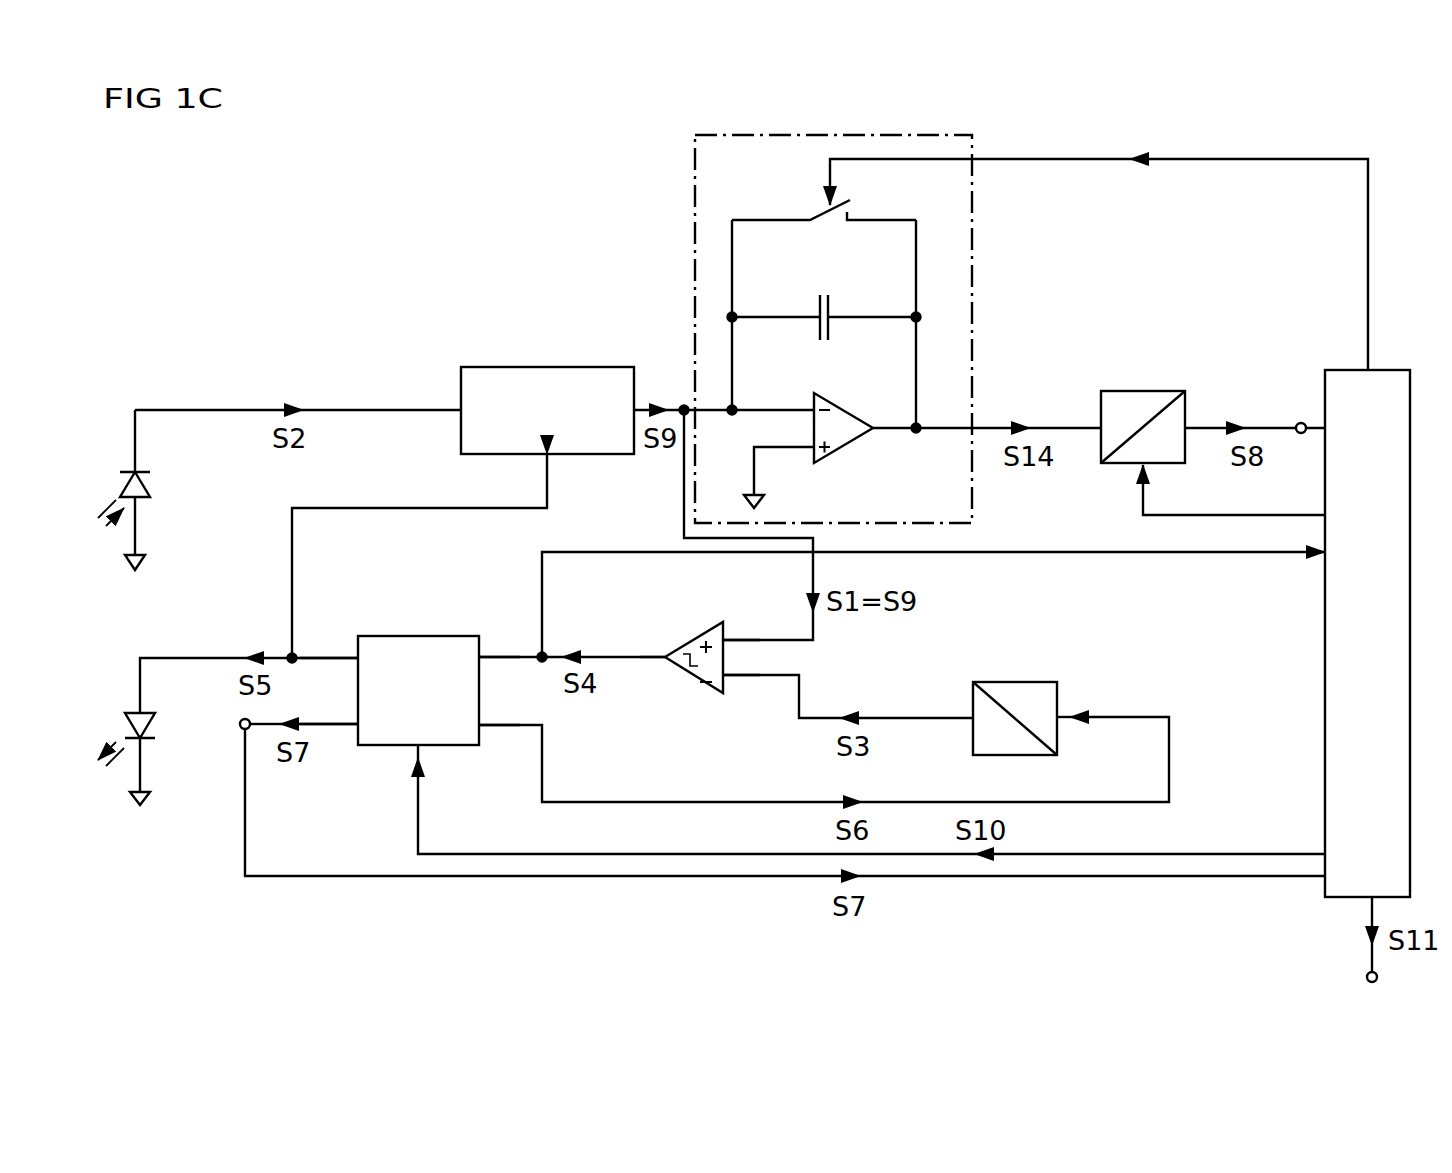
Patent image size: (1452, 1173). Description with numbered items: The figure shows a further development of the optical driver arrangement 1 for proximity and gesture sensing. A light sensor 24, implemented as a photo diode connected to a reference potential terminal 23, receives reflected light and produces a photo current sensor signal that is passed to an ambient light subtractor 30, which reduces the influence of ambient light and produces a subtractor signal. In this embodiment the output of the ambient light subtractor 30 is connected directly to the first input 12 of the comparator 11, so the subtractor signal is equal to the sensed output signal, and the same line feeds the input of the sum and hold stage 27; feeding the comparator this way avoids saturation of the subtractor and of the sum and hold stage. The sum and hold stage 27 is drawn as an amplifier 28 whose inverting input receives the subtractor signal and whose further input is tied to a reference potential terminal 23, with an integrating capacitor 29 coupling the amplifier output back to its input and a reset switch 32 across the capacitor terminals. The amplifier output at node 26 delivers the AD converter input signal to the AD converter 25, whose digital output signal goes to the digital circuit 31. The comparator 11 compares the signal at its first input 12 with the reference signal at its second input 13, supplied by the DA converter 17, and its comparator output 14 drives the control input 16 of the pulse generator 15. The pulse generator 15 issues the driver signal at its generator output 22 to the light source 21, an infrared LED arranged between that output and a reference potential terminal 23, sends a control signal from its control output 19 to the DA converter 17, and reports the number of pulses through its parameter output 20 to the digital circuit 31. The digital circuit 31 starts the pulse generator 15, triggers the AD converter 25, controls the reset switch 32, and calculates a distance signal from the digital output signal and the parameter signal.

The optical sensor device 1 is at (1410, 142).
The comparator 11 is at (690, 640).
The first input 12 is at (725, 640).
The second input 13 is at (725, 676).
The comparator output 14 is at (668, 662).
The pulse generator 15 is at (420, 636).
The control input 16 is at (479, 636).
The DA converter 17 is at (1015, 682).
The control output 19 is at (479, 745).
The parameter output 20 is at (358, 745).
The light source 21 is at (158, 724).
The generator output 22 is at (358, 636).
The reference potential terminal 23 is at (150, 561).
The light sensor 24 is at (162, 497).
The AD converter 25 is at (1140, 391).
The node 26 is at (920, 425).
The sum and hold stage 27 is at (835, 133).
The amplifier 28 is at (850, 413).
The integrating capacitor 29 is at (829, 293).
The ambient light subtractor 30 is at (556, 367).
The digital circuit 31 is at (1325, 643).
The reset switch 32 is at (824, 213).